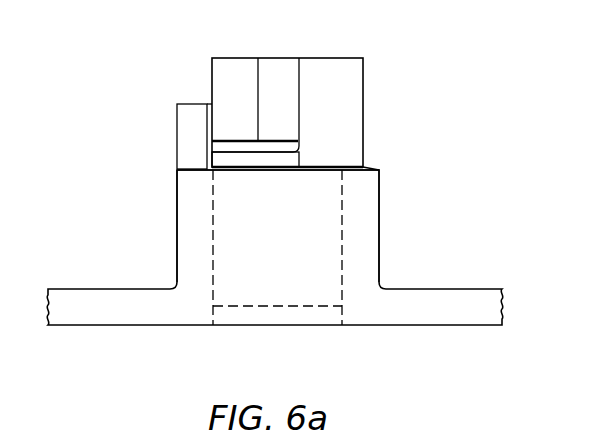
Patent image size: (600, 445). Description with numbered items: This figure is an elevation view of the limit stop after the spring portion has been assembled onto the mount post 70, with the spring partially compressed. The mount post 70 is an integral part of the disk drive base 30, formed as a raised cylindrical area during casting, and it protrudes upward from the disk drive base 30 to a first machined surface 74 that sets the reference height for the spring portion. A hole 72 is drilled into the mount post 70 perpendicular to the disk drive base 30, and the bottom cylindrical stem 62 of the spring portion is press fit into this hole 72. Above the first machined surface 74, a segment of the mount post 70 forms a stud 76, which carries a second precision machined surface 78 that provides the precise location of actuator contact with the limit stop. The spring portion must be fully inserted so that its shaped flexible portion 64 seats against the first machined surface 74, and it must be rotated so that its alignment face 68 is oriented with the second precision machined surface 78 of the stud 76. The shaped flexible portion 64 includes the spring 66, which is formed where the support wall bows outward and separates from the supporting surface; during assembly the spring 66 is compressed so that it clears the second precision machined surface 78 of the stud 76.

The disk drive base 30 is at (463, 291).
The bottom cylindrical stem 62 is at (283, 307).
The shaped flexible portion 64 is at (365, 88).
The spring 66 is at (211, 72).
The alignment face 68 is at (212, 157).
The mount post 70 is at (176, 232).
The hole 72 is at (342, 213).
The first machined surface 74 is at (370, 168).
The stud 76 is at (176, 129).
The second precision machined surface 78 is at (205, 121).